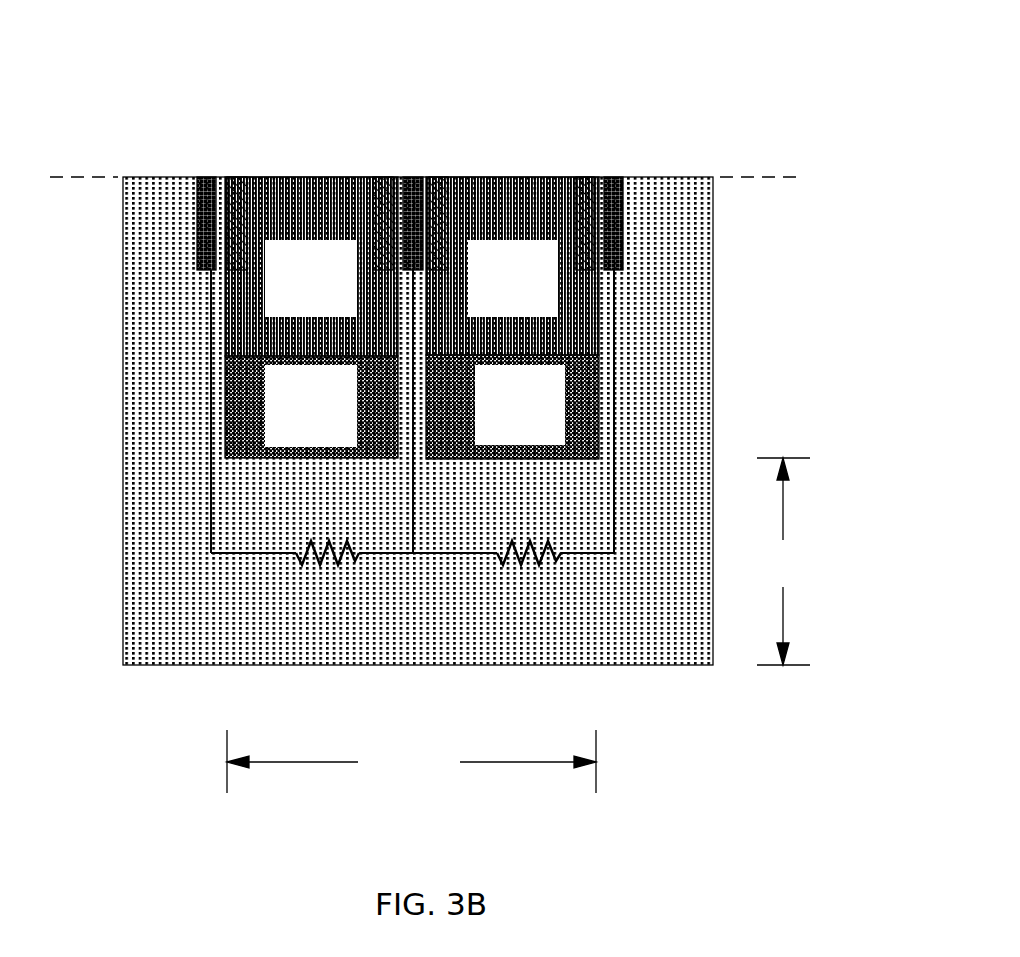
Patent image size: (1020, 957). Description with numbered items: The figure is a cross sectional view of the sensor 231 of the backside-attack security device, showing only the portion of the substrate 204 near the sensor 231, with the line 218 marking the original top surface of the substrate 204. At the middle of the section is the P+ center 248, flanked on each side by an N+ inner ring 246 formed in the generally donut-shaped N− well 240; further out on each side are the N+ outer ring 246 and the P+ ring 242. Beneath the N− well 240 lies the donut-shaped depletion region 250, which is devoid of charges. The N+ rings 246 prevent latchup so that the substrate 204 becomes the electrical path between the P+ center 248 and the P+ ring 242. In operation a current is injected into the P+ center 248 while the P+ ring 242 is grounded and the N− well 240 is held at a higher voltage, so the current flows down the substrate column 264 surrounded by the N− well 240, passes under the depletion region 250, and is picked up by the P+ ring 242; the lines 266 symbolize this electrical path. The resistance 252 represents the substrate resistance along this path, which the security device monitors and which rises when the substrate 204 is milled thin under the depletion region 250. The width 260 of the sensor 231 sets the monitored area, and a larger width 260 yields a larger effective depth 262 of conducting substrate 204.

The sensor 231 is at (69, 18).
The substrate 204 is at (135, 552).
The line 218 is at (768, 180).
The N− well 240 is at (527, 301).
The depletion region 250 is at (533, 442).
The P+ ring 242 is at (688, 135).
The N+ inner ring 246 is at (587, 190).
The P+ center 248 is at (414, 188).
The lines 266 is at (211, 468).
The substrate column 264 is at (423, 443).
The resistance 252 is at (318, 565).
The effective depth 262 is at (783, 561).
The width 260 is at (411, 761).